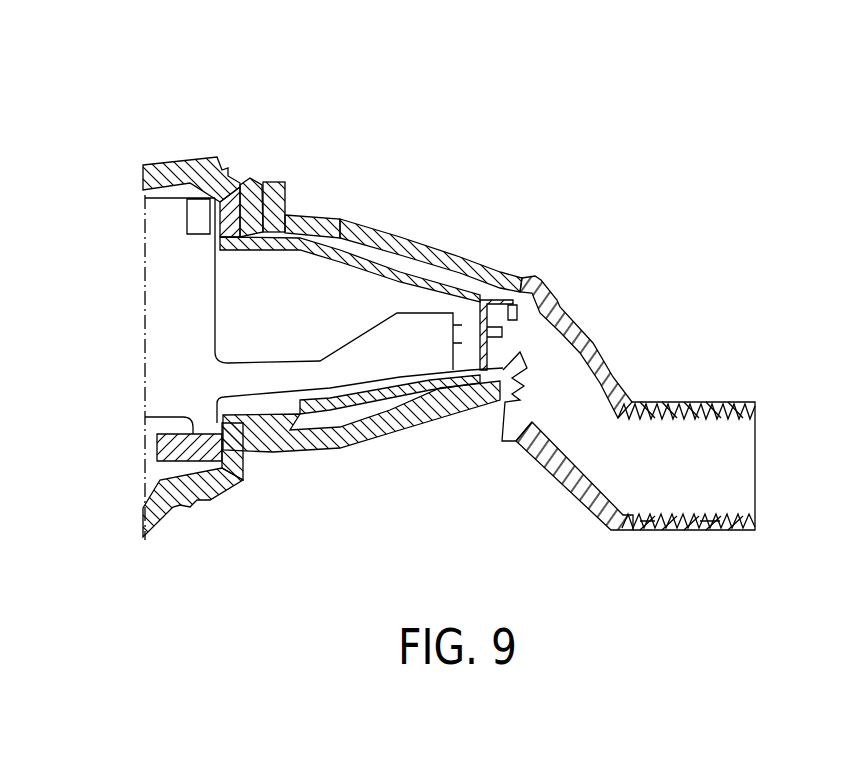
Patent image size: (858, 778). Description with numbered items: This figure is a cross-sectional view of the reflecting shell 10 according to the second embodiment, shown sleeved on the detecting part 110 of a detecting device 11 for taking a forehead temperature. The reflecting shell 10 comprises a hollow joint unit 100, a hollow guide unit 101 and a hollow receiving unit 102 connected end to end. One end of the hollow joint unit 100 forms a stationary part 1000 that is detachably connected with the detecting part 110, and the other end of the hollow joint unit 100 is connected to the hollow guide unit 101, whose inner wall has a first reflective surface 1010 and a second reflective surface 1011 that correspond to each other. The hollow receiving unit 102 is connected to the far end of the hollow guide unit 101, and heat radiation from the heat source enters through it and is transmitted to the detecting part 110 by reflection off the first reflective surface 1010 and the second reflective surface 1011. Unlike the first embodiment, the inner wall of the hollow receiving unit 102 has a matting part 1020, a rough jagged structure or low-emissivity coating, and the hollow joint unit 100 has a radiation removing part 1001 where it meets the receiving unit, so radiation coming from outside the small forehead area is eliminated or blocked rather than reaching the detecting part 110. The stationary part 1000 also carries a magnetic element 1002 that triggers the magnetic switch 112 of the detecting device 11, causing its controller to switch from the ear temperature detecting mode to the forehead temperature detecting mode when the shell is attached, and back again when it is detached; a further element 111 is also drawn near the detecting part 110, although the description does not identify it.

The reflecting shell 10 is at (640, 385).
The detecting device 11 is at (182, 158).
The hollow joint unit 100 is at (448, 261).
The hollow guide unit 101 is at (694, 58).
The hollow receiving unit 102 is at (706, 411).
The detecting part 110 is at (364, 270).
The retaining member 111 is at (494, 330).
The magnetic switch 112 is at (195, 219).
The stationary part 1000 is at (286, 204).
The radiation removing part 1001 is at (508, 400).
The magnetic element 1002 is at (275, 181).
The first reflective surface 1010 is at (565, 463).
The second reflective surface 1011 is at (600, 366).
The matting part 1020 is at (720, 513).